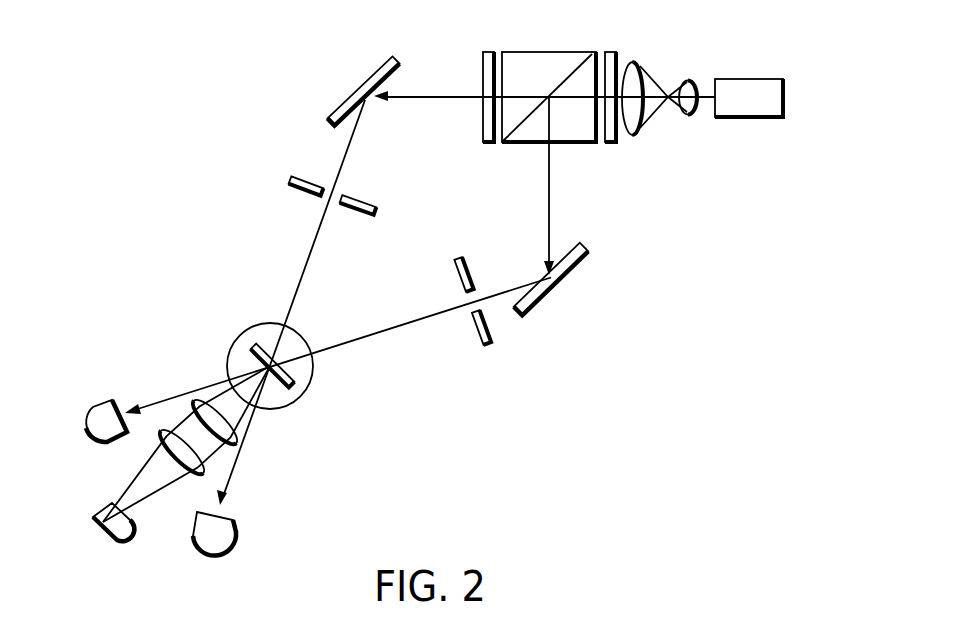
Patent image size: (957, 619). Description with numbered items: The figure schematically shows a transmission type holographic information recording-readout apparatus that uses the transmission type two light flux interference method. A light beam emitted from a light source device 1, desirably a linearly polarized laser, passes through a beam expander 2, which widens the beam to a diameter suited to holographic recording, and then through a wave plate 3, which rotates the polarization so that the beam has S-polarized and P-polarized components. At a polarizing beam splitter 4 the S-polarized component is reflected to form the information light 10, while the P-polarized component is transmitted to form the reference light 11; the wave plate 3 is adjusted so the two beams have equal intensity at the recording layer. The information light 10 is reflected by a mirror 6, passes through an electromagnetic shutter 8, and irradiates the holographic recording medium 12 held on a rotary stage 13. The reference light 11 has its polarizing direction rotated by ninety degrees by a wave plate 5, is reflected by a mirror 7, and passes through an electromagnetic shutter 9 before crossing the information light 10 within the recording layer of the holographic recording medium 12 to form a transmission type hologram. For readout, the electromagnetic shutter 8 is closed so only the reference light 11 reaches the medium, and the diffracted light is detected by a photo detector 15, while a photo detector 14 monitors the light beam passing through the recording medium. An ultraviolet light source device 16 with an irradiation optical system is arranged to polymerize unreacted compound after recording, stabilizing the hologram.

The light source device 1 is at (749, 78).
The beam expander 2 is at (666, 75).
The wave plate 3 is at (608, 51).
The polarizing beam splitter 4 is at (548, 51).
The wave plate 5 is at (487, 51).
The mirror 6 is at (590, 257).
The mirror 7 is at (379, 70).
The electromagnetic shutter 8 is at (488, 346).
The electromagnetic shutter 9 is at (288, 178).
The information light 10 is at (397, 328).
The reference light 11 is at (301, 275).
The holographic recording medium 12 is at (298, 388).
The rotary stage 13 is at (282, 408).
The photo detector 14 is at (237, 537).
The photo detector 15 is at (95, 403).
The ultraviolet light source device 16 is at (125, 538).